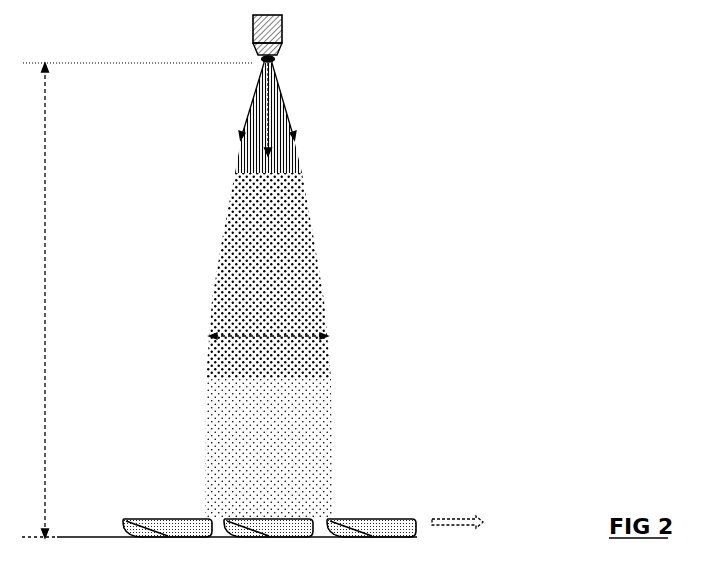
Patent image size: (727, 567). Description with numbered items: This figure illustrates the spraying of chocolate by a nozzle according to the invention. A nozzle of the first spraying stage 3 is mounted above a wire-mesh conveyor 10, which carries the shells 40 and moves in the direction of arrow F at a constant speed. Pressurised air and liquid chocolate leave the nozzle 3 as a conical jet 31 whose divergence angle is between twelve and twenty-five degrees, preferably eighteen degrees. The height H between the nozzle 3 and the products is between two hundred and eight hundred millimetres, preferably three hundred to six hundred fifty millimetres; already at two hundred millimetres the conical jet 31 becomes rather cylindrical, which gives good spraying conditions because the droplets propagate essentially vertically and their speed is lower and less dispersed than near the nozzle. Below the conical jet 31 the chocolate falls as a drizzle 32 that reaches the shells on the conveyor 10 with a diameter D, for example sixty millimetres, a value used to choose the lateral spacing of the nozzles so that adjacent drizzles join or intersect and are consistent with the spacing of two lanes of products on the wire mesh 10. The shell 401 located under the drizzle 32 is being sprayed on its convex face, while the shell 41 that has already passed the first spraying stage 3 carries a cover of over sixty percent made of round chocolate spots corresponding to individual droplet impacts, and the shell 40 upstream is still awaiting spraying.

The first spraying stage nozzle 3 is at (283, 36).
The conical jet 31 is at (280, 115).
The chocolate drizzle 32 is at (313, 390).
The wire-mesh conveyor 10 is at (97, 536).
The shell 40 is at (167, 518).
The substrate under the jet 401 is at (275, 516).
The shell covered by the first spraying stage 41 is at (374, 518).
The height H is at (138, 300).
The drizzle diameter D is at (268, 329).
The direction of conveyor movement F is at (457, 513).